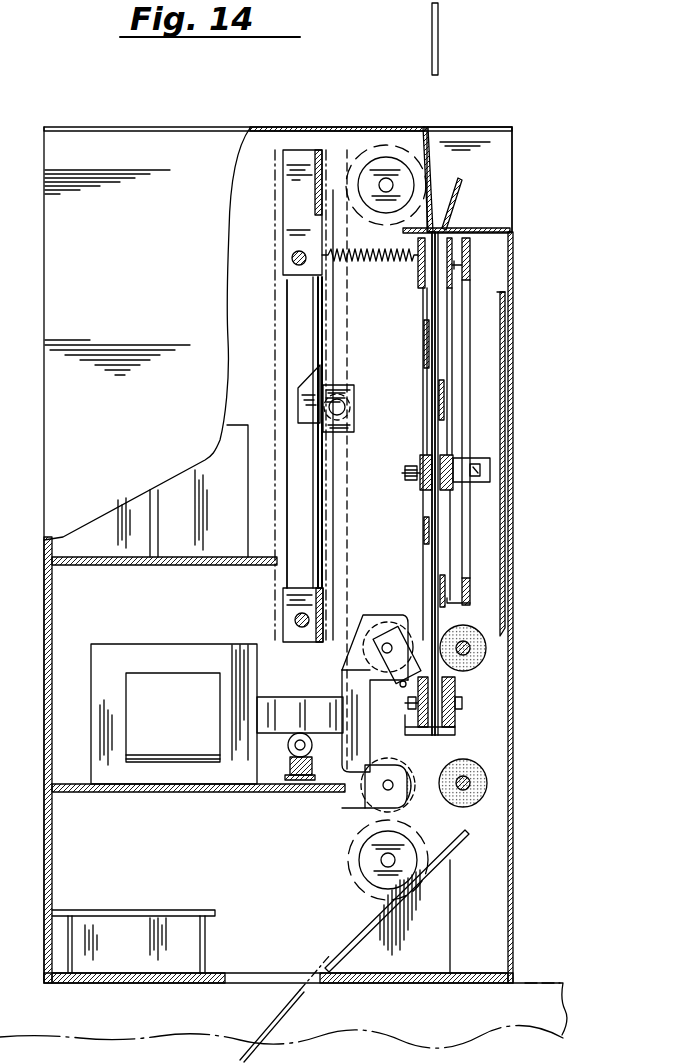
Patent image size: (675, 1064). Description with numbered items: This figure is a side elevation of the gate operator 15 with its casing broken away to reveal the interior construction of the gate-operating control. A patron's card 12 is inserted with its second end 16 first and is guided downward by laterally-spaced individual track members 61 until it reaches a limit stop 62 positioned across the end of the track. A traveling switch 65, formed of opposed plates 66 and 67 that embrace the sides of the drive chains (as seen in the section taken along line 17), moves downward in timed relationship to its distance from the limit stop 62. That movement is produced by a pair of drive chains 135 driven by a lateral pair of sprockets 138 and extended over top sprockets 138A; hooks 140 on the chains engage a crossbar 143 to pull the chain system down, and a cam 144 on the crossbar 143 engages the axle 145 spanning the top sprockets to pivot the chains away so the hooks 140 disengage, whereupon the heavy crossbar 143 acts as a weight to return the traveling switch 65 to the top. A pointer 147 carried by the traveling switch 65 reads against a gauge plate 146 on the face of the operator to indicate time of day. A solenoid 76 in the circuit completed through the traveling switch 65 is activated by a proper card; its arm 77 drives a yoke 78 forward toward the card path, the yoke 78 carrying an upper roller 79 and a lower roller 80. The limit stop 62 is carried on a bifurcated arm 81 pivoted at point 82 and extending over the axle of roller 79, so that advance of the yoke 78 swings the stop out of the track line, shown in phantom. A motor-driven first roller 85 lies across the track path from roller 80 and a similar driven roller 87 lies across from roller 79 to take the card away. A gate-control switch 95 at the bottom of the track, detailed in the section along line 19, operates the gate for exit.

The card 12 is at (438, 50).
The gate operator 15 is at (410, 94).
The second end of the card 16 is at (317, 655).
The section line 17- 17 is at (257, 238).
The section line 19- 19 is at (385, 702).
The track members 61 is at (423, 340).
The limit stop 62 is at (462, 724).
The traveling switch 65 is at (418, 490).
The opposed plate 66 is at (450, 456).
The opposed plate 67 is at (417, 479).
The solenoid 76 is at (183, 727).
The arm 77 is at (272, 700).
The yoke 78 is at (360, 780).
The roller 79 is at (355, 613).
The roller 80 is at (390, 807).
The arm 81 is at (392, 672).
The pivot point 82 is at (400, 685).
The first roller 85 is at (487, 792).
The roller 87 is at (487, 650).
The gate-control switch 95 is at (462, 692).
The drive chains 135 is at (280, 366).
The sprockets 138 is at (283, 612).
The top sprockets 138A is at (290, 256).
The hooks 140 is at (352, 412).
The crossbar 143 is at (355, 392).
The cam 144 is at (298, 394).
The axle 145 is at (307, 262).
The gauge plate 146 is at (472, 398).
The pointer 147 is at (477, 480).